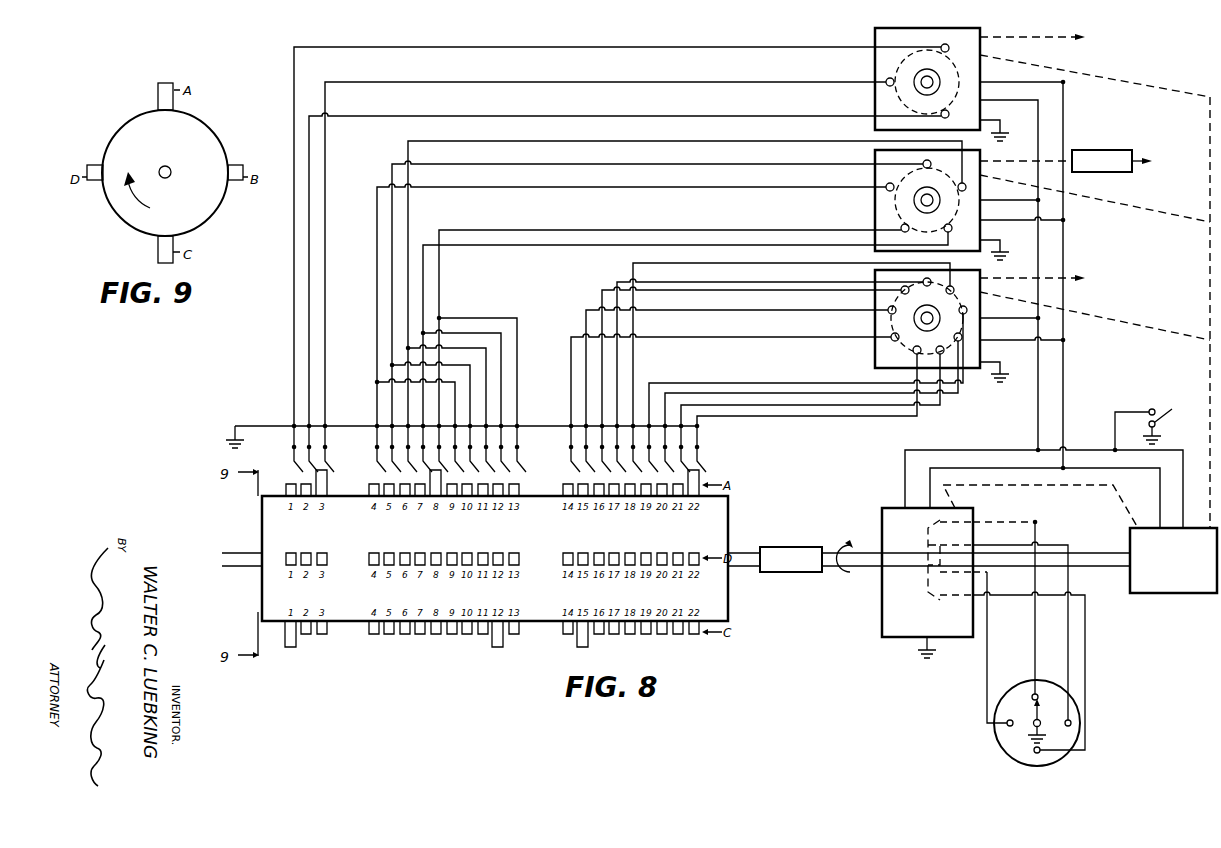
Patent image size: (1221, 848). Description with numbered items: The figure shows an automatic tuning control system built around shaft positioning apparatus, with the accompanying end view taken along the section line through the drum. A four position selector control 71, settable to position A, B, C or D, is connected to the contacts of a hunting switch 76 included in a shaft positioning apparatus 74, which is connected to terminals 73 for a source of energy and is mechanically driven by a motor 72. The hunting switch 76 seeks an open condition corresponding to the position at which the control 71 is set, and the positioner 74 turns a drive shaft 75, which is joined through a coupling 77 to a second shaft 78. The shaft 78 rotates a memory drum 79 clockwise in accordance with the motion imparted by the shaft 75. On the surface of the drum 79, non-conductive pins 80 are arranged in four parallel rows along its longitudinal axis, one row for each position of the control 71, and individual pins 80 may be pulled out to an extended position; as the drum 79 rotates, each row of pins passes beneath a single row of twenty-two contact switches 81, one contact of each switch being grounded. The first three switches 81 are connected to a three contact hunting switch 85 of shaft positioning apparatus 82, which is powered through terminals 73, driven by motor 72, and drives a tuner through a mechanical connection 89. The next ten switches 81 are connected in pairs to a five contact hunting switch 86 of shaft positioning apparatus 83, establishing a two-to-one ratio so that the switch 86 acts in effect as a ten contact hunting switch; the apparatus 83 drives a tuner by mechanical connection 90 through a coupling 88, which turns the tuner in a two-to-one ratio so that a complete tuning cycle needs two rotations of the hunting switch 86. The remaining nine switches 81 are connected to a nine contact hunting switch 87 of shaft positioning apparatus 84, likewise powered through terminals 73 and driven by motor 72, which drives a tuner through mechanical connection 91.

In FIG. 8, the four position selector control 71 is at (1060, 762).
In FIG. 8, the motor 72 is at (1152, 597).
In FIG. 8, the terminals 73 is at (1156, 412).
In FIG. 8, the shaft positioning apparatus 74 is at (884, 634).
In FIG. 8, the drive shaft 75 is at (864, 578).
In FIG. 8, the hunting switch 76 is at (926, 578).
In FIG. 8, the coupling 77 is at (783, 575).
In FIG. 9, the second shaft 78 is at (171, 175).
In FIG. 8, the second shaft 78 is at (748, 568).
In FIG. 9, the drum 79 is at (199, 231).
In FIG. 8, the drum 79 is at (386, 623).
In FIG. 9, the pins 80 is at (157, 100).
In FIG. 8, the pins 80 is at (327, 492).
In FIG. 8, the contact switches 81 is at (326, 462).
In FIG. 8, the shaft positioning apparatus 82 is at (876, 38).
In FIG. 8, the shaft positioning apparatus 83 is at (876, 222).
In FIG. 8, the shaft positioning apparatus 84 is at (875, 358).
In FIG. 8, the three contact hunting switch 85 is at (897, 92).
In FIG. 8, the five contact hunting switch 86 is at (892, 197).
In FIG. 8, the nine contact hunting switch 87 is at (888, 322).
In FIG. 8, the coupling 88 is at (1100, 150).
In FIG. 8, the mechanical connection 89 is at (1035, 40).
In FIG. 8, the mechanical connection 90 is at (1048, 160).
In FIG. 8, the mechanical connection 91 is at (1048, 278).